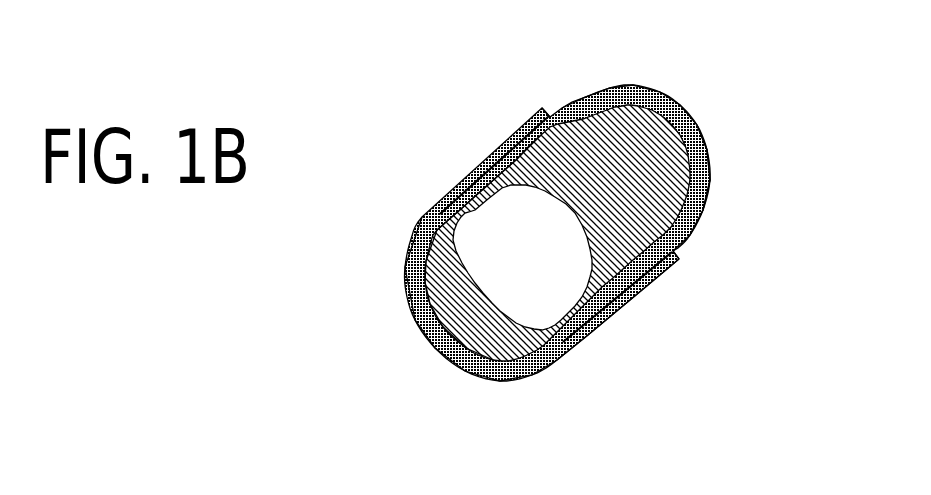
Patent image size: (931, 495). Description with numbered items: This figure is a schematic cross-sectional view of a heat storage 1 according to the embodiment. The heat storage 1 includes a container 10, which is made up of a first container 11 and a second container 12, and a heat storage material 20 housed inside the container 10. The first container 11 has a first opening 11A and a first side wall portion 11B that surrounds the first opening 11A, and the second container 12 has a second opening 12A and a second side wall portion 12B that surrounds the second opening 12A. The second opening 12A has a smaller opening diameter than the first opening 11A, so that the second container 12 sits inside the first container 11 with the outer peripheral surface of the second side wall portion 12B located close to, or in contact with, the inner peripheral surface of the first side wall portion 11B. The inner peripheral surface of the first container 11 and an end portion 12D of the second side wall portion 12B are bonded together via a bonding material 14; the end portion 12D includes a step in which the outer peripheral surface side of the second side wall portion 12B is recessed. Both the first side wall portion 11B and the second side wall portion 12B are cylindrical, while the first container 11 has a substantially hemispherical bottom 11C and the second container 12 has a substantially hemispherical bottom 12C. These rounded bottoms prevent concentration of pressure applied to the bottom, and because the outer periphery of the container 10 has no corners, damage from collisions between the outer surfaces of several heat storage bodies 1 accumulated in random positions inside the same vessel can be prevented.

The heat storage 1 is at (762, 108).
The container 10 is at (435, 88).
The first container 11 is at (508, 137).
The first opening 11A is at (475, 167).
The first side wall portion 11B is at (460, 183).
The bottom 11C is at (398, 323).
The second container 12 is at (597, 95).
The second opening 12A is at (518, 283).
The second side wall portion 12B is at (613, 288).
The bottom 12C is at (678, 110).
The end portion 12D is at (451, 208).
The bonding material 14 is at (433, 206).
The heat storage material 20 is at (707, 180).